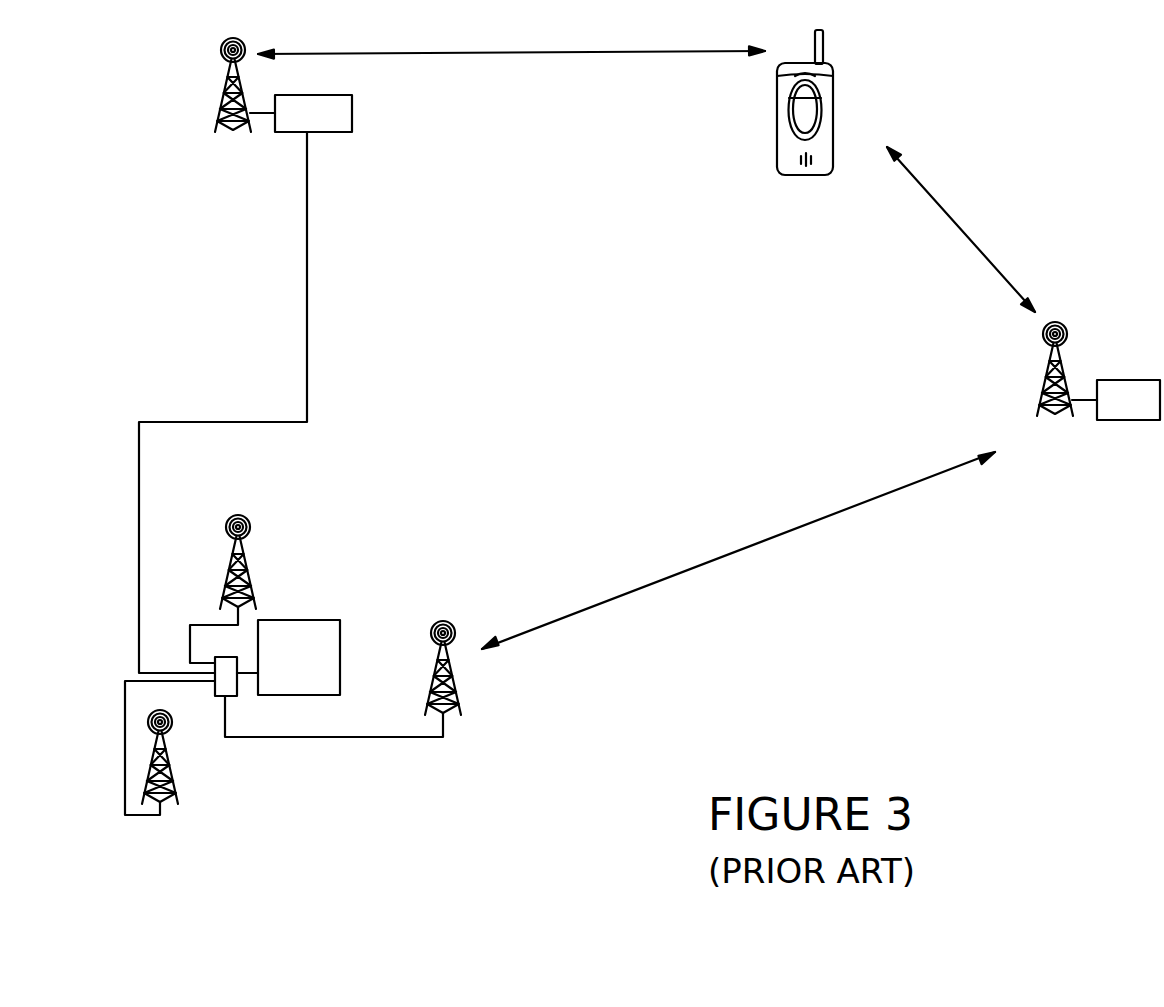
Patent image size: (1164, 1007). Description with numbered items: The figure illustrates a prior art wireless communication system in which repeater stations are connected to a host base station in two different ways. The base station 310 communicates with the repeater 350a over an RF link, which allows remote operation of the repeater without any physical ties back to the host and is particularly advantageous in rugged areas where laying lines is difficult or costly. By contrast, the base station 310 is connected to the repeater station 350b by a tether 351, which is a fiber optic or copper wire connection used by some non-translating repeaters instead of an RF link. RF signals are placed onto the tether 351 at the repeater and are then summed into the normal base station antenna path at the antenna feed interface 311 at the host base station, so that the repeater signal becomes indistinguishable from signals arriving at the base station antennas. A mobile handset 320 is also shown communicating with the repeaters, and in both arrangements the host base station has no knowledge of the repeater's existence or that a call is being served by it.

The base station 310 is at (288, 657).
The antenna feed interface 311 is at (231, 696).
The mobile station 320 is at (835, 90).
The repeater 350a is at (1098, 371).
The repeater station 350b is at (283, 85).
The tether 351 is at (307, 327).